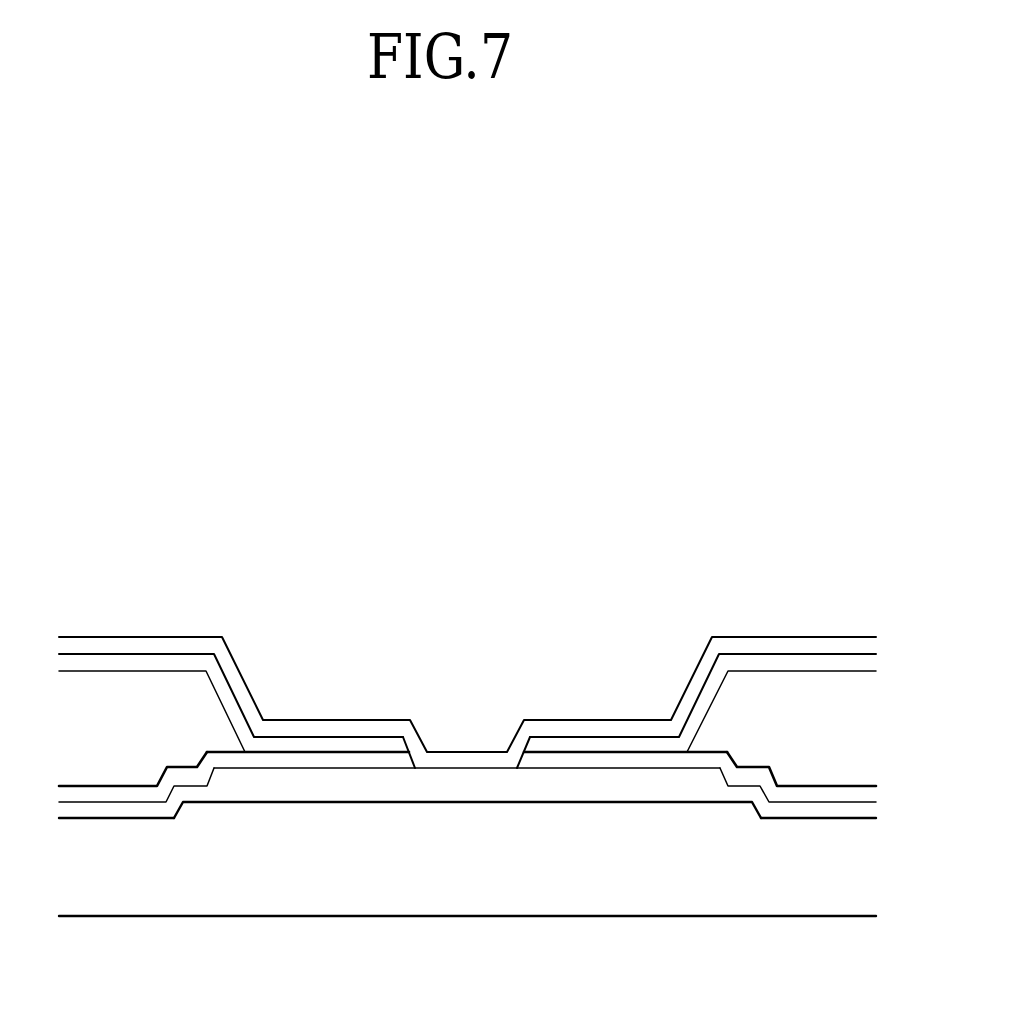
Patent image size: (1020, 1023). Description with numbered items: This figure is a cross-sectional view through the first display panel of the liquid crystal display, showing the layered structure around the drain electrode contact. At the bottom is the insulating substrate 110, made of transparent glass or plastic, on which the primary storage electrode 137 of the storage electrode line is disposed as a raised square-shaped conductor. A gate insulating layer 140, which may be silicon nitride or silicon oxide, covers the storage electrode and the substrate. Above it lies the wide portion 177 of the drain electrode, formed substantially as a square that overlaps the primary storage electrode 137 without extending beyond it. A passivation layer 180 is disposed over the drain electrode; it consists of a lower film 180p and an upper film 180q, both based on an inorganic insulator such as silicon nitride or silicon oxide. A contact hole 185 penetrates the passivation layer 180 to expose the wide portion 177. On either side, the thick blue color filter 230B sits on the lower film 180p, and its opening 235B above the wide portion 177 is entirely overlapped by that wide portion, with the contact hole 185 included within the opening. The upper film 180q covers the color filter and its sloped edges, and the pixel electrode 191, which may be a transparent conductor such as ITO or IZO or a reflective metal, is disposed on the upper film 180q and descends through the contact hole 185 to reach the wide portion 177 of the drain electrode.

The insulating substrate 110 is at (803, 887).
The primary storage electrode 137 is at (483, 810).
The gate insulating layer 140 is at (111, 809).
The wide portion 177 is at (363, 777).
The passivation layer 180 is at (297, 600).
The lower film 180p is at (307, 758).
The upper film 180q is at (363, 745).
The contact hole 185 is at (527, 747).
The pixel electrode 191 is at (743, 650).
The blue color filter 230B is at (93, 705).
The opening in the blue color filter 235B is at (222, 697).